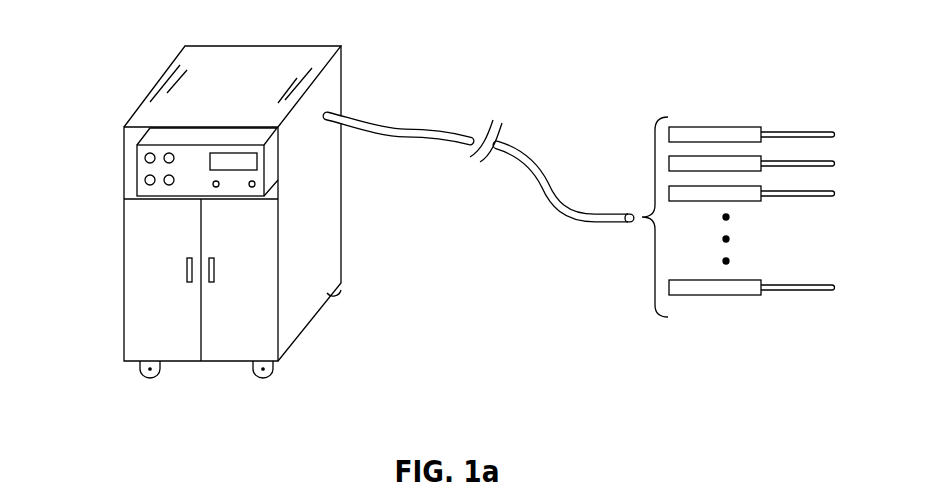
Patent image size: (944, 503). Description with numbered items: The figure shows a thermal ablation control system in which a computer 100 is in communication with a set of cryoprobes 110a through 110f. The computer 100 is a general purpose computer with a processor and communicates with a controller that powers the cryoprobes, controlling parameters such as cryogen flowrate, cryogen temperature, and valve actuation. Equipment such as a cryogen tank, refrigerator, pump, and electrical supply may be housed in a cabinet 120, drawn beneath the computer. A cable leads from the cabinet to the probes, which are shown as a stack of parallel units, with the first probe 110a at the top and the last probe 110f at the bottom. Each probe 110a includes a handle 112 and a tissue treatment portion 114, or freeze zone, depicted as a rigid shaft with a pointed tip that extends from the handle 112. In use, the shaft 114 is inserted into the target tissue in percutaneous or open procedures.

The computer 100 is at (137, 172).
The cabinet 120 is at (135, 275).
The cryoprobe 110a is at (713, 211).
The cryoprobe 110f is at (722, 300).
The handle 112 is at (717, 125).
The tissue treatment portion 114 is at (763, 112).